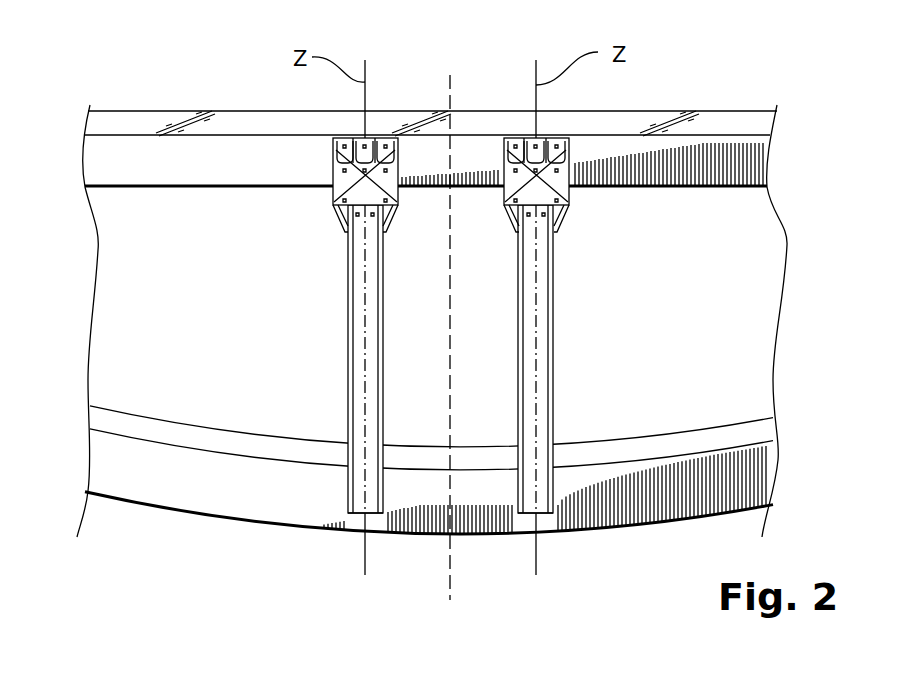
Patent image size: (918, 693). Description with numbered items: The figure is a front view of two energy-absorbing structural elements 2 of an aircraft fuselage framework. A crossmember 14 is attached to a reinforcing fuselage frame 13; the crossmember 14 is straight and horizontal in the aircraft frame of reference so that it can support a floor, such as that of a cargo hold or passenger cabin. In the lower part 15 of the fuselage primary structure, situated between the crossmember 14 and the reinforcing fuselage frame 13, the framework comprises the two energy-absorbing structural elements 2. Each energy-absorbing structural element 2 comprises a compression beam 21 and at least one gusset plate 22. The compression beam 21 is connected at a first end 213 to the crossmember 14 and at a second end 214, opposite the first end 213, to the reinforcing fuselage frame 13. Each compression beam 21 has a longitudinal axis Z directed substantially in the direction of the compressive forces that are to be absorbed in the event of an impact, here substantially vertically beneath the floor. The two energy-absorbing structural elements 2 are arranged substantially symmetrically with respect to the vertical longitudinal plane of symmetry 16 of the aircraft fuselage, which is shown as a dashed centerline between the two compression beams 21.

The energy-absorbing structural element 2 is at (453, 334).
The reinforcing fuselage frame 13 is at (121, 480).
The crossmember 14 is at (150, 147).
The lower part 15 is at (258, 408).
The vertical longitudinal plane of symmetry 16 is at (450, 75).
The compression beam 21 is at (376, 300).
The gusset plate 22 is at (320, 148).
The first end 213 is at (373, 222).
The second end 214 is at (373, 505).